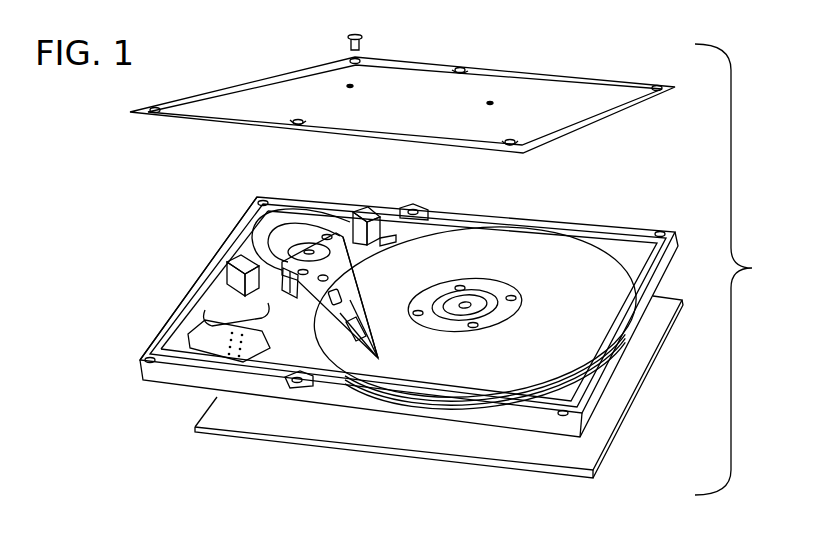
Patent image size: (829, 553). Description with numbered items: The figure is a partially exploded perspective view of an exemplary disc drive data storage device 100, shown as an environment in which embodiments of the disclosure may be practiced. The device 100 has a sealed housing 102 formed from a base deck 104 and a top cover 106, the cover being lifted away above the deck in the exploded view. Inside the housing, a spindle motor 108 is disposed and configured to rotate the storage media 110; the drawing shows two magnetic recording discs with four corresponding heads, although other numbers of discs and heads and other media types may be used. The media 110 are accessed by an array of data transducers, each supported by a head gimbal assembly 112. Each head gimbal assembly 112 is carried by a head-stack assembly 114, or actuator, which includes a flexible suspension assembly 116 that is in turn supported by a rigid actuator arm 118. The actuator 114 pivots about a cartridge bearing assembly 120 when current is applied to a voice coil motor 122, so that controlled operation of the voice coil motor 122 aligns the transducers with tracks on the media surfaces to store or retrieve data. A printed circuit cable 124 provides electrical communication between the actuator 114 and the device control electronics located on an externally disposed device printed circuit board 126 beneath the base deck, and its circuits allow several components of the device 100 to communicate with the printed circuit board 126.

The disc drive data storage device 100 is at (744, 269).
The sealed housing 102 is at (168, 198).
The base deck 104 is at (620, 353).
The top cover 106 is at (487, 80).
The spindle motor 108 is at (477, 300).
The storage media 110 is at (465, 390).
The head gimbal assembly 112 is at (380, 352).
The head-stack assembly 114 is at (360, 278).
The flexible suspension assembly 116 is at (376, 336).
The rigid actuator arm 118 is at (362, 302).
The cartridge bearing assembly 120 is at (372, 208).
The voice coil motor 122 is at (309, 250).
The printed circuit cable 124 is at (230, 300).
The device printed circuit board 126 is at (200, 430).